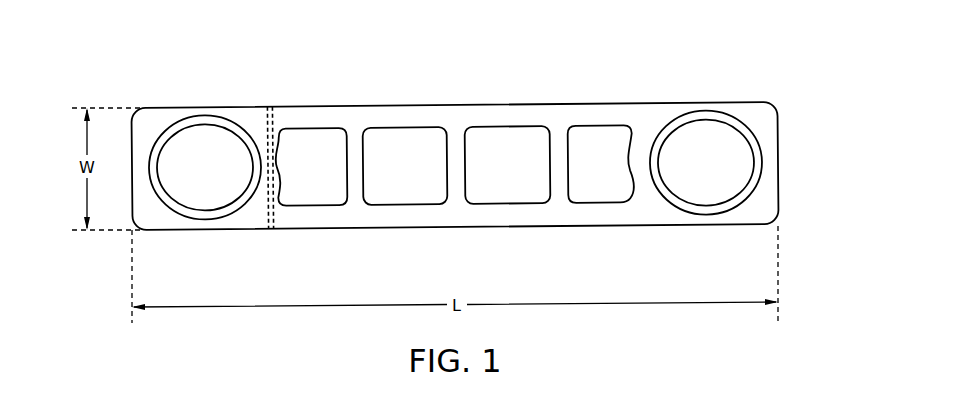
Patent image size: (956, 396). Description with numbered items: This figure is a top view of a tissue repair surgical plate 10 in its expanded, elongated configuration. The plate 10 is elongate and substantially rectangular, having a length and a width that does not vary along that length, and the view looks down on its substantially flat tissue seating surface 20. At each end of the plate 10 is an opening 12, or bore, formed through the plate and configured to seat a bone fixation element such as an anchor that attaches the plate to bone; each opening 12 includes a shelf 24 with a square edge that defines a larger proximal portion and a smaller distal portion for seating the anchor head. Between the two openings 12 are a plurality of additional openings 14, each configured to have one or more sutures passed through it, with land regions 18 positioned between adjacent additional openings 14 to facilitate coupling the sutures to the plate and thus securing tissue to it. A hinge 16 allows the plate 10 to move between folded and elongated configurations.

The surgical plate 10 is at (454, 149).
The openings 12 is at (200, 135).
The additional openings 14 is at (392, 183).
The hinges 16 is at (270, 105).
The land regions 18 is at (562, 158).
The tissue seating surface 20 is at (595, 102).
The shelf 24 is at (152, 168).